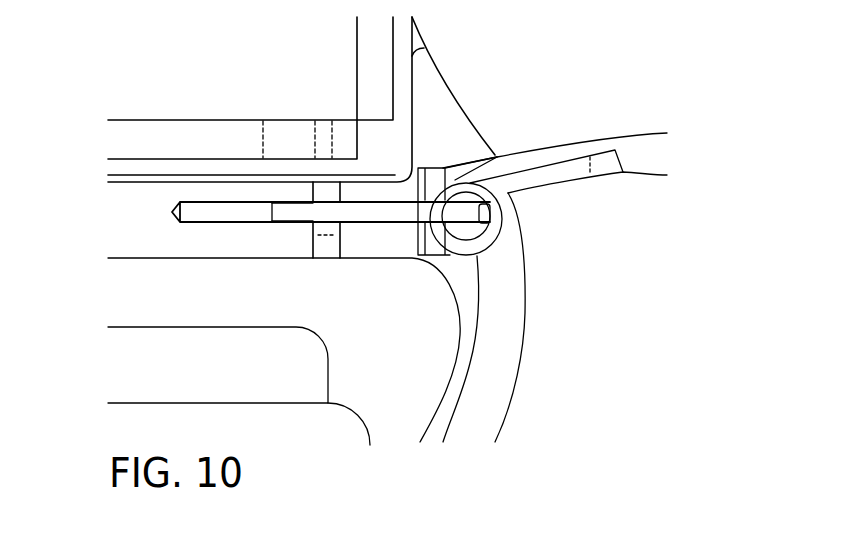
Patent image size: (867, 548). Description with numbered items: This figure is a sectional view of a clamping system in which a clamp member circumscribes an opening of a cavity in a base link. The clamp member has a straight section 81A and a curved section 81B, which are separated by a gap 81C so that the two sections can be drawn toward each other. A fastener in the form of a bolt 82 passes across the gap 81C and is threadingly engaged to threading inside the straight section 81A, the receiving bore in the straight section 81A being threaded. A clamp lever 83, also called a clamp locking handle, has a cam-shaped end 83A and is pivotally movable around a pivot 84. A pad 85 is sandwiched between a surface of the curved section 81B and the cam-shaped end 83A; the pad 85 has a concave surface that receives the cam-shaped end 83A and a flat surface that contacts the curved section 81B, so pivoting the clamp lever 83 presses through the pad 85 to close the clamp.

The straight section 81A is at (162, 244).
The curved section 81B is at (455, 378).
The gap 81C is at (329, 250).
The bolt 82 is at (300, 213).
The clamp lever 83 is at (650, 145).
The cam-shaped end 83A is at (480, 256).
The pivot 84 is at (468, 185).
The pad 85 is at (431, 252).